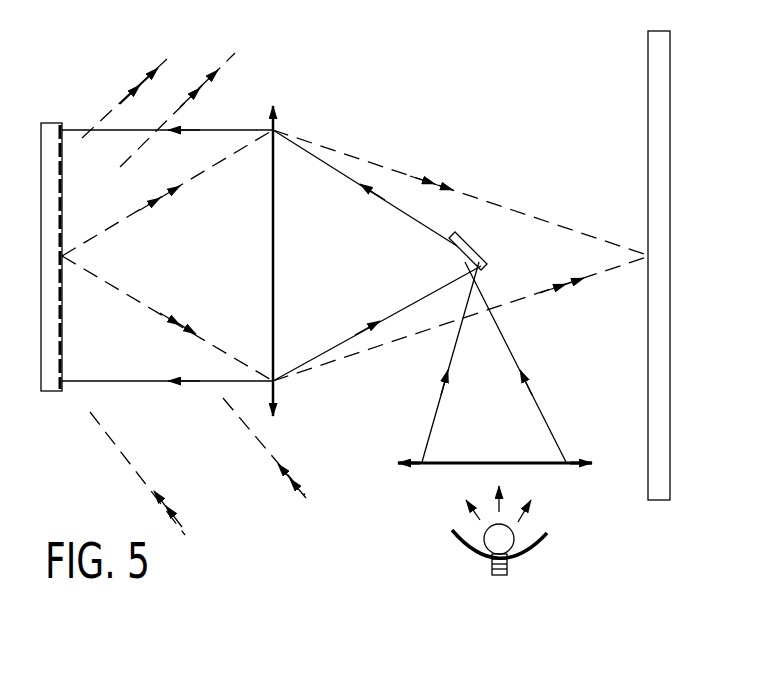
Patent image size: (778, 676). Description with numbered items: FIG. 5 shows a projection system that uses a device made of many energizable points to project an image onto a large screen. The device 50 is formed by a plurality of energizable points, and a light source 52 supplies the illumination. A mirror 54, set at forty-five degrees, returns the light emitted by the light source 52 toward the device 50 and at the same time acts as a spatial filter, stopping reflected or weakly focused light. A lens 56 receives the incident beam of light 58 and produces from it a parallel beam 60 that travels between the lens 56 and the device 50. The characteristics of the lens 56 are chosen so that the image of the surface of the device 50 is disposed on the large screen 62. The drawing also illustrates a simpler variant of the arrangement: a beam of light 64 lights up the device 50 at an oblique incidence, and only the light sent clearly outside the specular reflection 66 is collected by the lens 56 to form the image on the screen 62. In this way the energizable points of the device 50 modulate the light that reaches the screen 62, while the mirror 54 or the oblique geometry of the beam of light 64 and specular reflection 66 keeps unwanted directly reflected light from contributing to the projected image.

The device 50 is at (50, 137).
The light source 52 is at (513, 538).
The mirror 54 is at (470, 248).
The lens 56 is at (277, 350).
The incident beam of light 58 is at (345, 310).
The parallel beam 60 is at (133, 342).
The large screen 62 is at (653, 112).
The beam of light 64 is at (181, 525).
The specular reflection 66 is at (144, 82).